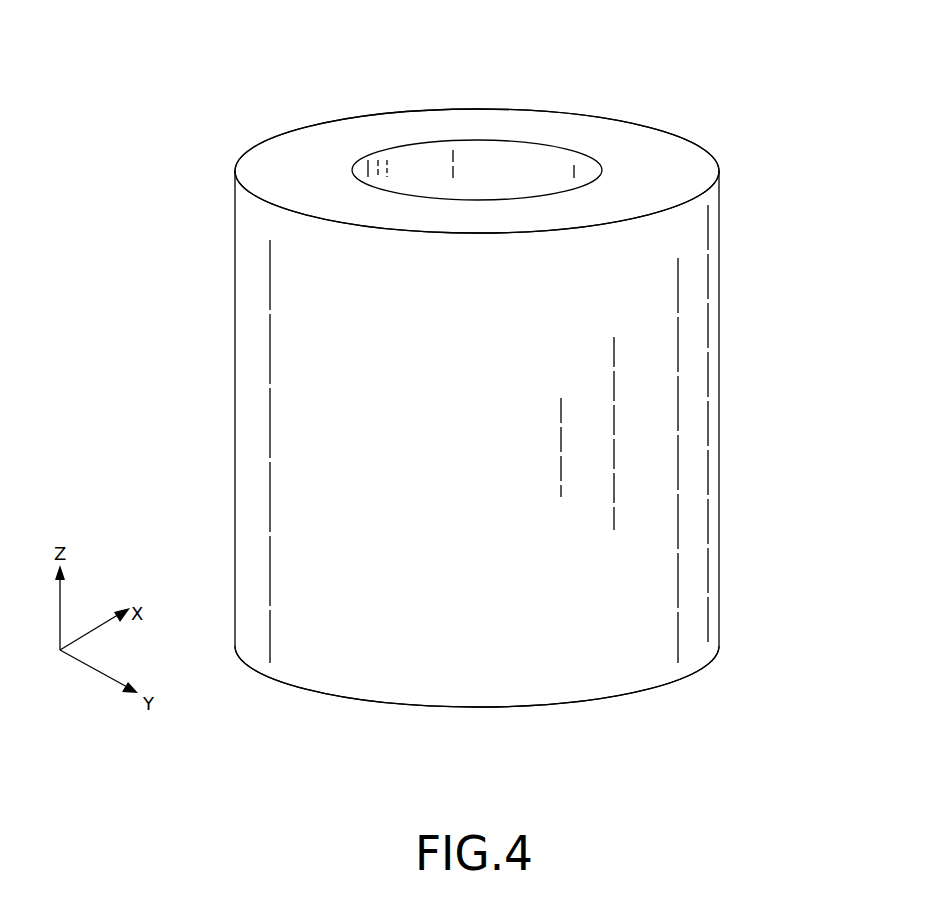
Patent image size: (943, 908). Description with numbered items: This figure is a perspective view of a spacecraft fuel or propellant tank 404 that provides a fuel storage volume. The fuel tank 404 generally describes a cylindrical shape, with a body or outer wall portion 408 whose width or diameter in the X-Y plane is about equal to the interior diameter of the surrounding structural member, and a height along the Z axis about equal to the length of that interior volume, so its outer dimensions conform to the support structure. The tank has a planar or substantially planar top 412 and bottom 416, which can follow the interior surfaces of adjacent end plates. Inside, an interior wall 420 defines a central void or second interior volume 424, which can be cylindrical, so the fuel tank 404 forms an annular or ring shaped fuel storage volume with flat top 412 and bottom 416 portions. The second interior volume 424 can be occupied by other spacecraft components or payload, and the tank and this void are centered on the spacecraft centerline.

The fuel tank 404 is at (694, 676).
The outer wall portion 408 is at (719, 330).
The top portion 412 is at (318, 140).
The bottom portion 416 is at (448, 707).
The interior wall 420 is at (410, 165).
The second interior volume 424 is at (536, 174).